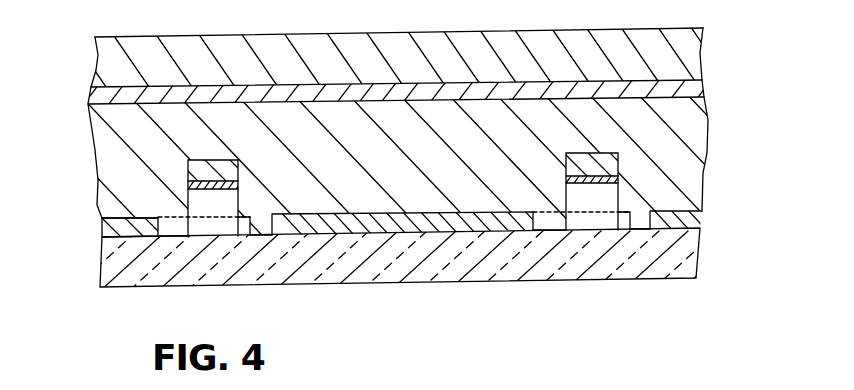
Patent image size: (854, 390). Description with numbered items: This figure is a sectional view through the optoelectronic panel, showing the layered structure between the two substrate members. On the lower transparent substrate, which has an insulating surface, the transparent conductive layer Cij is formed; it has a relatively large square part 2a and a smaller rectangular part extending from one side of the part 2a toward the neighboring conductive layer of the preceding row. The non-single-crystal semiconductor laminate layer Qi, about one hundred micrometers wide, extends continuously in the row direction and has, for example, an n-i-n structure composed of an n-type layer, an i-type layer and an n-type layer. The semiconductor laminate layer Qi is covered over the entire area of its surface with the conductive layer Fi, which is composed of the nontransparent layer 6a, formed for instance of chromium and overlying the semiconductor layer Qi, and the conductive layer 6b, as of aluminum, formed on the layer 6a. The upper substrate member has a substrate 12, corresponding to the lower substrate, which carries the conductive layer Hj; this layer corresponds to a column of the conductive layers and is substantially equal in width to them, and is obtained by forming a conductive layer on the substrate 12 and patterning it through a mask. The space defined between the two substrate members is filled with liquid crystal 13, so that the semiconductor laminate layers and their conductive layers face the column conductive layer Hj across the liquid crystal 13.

The substrate 12 is at (405, 41).
The liquid crystal 13 is at (703, 133).
The conductive layer Hj is at (308, 90).
The conductive layer Fi is at (222, 175).
The conductive layer 6b is at (240, 176).
The nontransparent layer 6a is at (238, 186).
The non-single-crystal semiconductor laminate layer Qi is at (195, 202).
The square part 2a is at (455, 227).
The conductive layer Cij is at (368, 234).